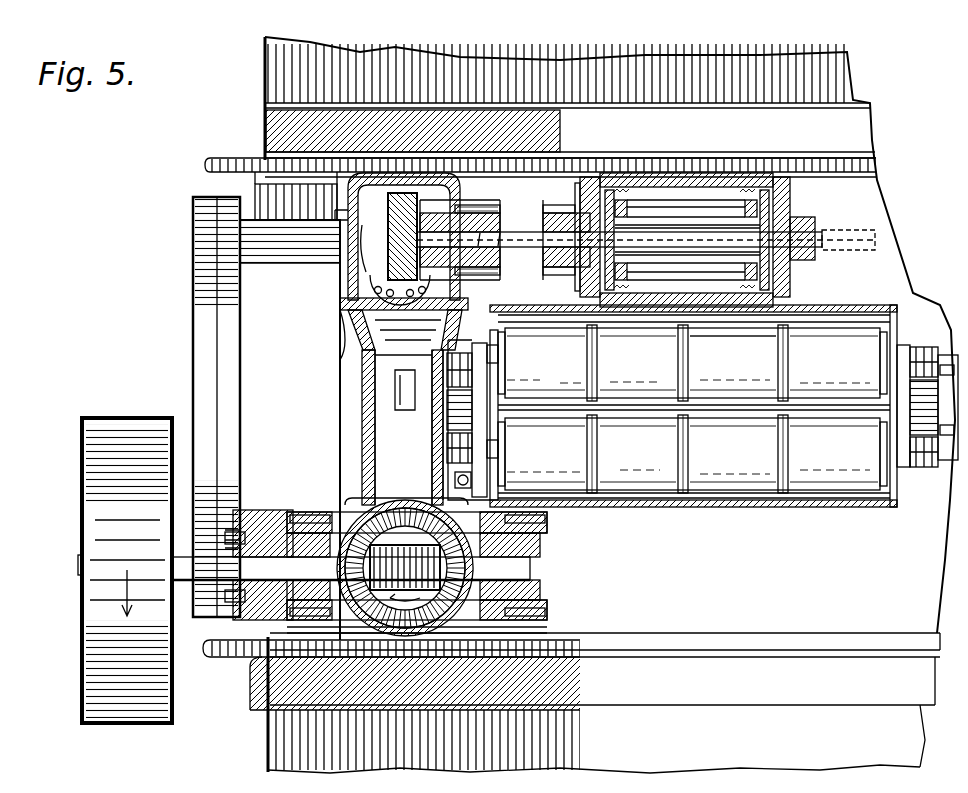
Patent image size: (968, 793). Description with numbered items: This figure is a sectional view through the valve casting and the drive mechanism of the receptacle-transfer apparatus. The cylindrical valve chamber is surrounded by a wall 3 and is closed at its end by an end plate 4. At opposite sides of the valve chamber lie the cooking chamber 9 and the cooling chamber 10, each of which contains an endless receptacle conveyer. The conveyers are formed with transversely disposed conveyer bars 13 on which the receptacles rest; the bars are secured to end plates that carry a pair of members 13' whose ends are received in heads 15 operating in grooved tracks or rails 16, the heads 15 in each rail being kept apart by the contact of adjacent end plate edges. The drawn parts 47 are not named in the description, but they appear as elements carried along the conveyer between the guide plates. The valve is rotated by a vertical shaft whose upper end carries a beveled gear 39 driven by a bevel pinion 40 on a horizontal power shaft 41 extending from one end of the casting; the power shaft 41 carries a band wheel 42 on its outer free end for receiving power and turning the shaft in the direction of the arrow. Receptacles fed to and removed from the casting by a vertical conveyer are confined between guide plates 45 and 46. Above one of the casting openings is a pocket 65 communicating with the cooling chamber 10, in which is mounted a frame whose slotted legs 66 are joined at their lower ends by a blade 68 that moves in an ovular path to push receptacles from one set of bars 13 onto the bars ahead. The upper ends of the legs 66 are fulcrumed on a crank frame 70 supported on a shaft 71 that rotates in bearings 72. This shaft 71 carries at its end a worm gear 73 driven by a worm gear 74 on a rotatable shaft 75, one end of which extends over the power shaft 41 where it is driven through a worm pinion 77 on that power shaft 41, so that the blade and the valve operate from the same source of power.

The wall 3 is at (280, 400).
The end plate 4 is at (205, 298).
The cooking chamber 9 is at (655, 778).
The cooling chamber 10 is at (617, 52).
The conveyer bar 13 is at (703, 406).
The member 13' is at (919, 471).
The head 15 is at (440, 432).
The grooved track 16 is at (938, 300).
The beveled gear 39 is at (440, 600).
The bevel pinion 40 is at (350, 620).
The power shaft 41 is at (200, 585).
The band wheel 42 is at (125, 570).
The guide plate 45 is at (718, 506).
The guide plate 46 is at (840, 302).
The roller 47 is at (687, 409).
The pocket 65 is at (690, 190).
The leg 66 is at (770, 240).
The blade 68 is at (690, 242).
The crank frame 70 is at (720, 200).
The shaft 71 is at (538, 210).
The bearing 72 is at (590, 185).
The worm gear 73 is at (405, 195).
The worm gear 74 is at (355, 258).
The rotatable shaft 75 is at (345, 328).
The worm pinion 77 is at (405, 505).